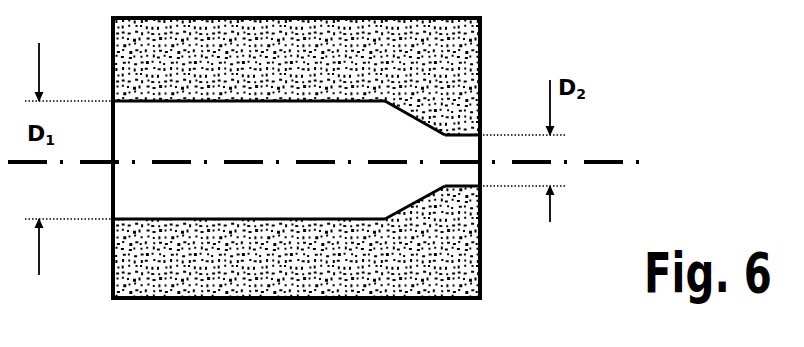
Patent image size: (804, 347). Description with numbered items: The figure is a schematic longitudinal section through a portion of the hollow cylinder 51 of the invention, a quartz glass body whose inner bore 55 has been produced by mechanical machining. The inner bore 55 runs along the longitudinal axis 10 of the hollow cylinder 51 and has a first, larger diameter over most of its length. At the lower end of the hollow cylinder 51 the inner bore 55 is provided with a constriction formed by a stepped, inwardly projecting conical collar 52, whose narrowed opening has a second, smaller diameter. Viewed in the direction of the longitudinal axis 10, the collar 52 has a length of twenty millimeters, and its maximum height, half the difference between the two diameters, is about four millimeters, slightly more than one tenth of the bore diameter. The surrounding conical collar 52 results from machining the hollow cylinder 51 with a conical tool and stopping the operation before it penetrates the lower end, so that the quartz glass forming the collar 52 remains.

The longitudinal axis 10 is at (616, 162).
The hollow cylinder 51 is at (467, 82).
The conical collar 52 is at (405, 112).
The inner bore 55 is at (205, 138).